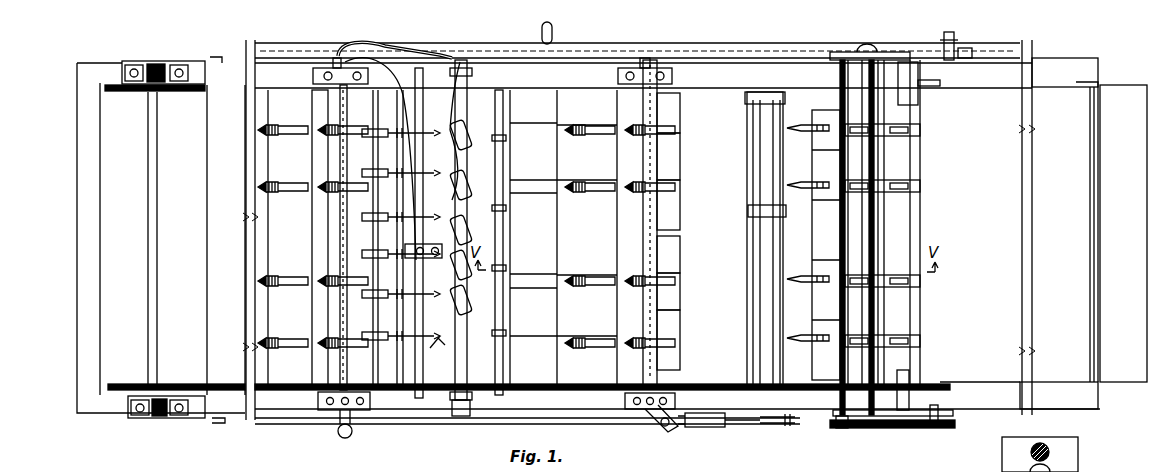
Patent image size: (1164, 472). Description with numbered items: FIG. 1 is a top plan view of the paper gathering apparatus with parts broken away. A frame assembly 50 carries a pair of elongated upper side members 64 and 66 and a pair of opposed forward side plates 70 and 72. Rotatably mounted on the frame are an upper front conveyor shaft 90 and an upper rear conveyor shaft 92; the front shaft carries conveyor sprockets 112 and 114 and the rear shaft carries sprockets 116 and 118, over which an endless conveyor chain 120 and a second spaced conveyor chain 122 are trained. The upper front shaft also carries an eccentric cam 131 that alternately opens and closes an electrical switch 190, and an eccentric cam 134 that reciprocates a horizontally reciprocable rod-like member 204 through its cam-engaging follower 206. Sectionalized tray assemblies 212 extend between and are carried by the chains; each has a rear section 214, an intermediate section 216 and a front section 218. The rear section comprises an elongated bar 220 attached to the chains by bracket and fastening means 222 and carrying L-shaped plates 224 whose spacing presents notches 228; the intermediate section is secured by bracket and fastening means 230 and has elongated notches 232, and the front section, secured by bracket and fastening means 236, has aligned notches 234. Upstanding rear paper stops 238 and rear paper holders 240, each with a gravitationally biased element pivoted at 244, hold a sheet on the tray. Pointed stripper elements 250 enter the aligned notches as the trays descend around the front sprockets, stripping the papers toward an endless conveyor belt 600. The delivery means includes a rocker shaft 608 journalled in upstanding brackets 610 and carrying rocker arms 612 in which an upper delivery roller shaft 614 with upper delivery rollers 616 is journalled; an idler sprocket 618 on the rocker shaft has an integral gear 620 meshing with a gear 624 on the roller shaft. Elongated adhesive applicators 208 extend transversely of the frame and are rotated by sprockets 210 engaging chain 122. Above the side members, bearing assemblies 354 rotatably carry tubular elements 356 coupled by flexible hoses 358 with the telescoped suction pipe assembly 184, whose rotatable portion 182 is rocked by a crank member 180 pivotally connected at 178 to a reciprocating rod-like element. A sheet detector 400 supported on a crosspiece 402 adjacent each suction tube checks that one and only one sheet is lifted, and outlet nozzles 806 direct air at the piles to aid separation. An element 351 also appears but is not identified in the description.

The frame assembly 50 is at (245, 52).
The upper side member 64 is at (280, 412).
The upper side member 66 is at (735, 62).
The forward side plate 70 is at (1078, 410).
The forward side plate 72 is at (1062, 58).
The upper front conveyor shaft 90 is at (765, 302).
The upper rear conveyor shaft 92 is at (150, 232).
The conveyor sprocket 112 is at (770, 90).
The conveyor sprocket 114 is at (755, 385).
The conveyor sprocket 116 is at (150, 62).
The conveyor sprocket 118 is at (155, 417).
The endless conveyor chain 120 is at (185, 92).
The endless conveyor chain 122 is at (193, 383).
The eccentric cam 131 is at (755, 198).
The eccentric cam 134 is at (783, 425).
The pivotal connection 178 is at (949, 32).
The crank member 180 is at (965, 48).
The rotatable portion 182 is at (648, 43).
The suction pipe assembly 184 is at (1000, 45).
The electrical switch 190 is at (750, 225).
The rod-like member 204 is at (407, 420).
The cam-engaging follower 206 is at (725, 428).
The adhesive applicator 208 is at (660, 155).
The sprocket 210 is at (318, 410).
The tray assembly 212 is at (292, 98).
The rear section 214 is at (490, 90).
The intermediate section 216 is at (597, 98).
The section 218 is at (672, 102).
The elongated bar 220 is at (495, 105).
The bracket and fastening means 222 is at (500, 90).
The L-shaped plates 224 is at (523, 140).
The notches 228 is at (548, 128).
The bracket and fastening means 230 is at (563, 90).
The elongated notches 232 is at (605, 128).
The notches 234 is at (668, 125).
The bracket and fastening means 236 is at (625, 370).
The rear paper stops 238 is at (510, 216).
The rear paper holders 240 is at (495, 145).
The pivot 244 is at (165, 471).
The stripper element 250 is at (800, 128).
The bar 351 is at (436, 233).
The bearing assembly 354 is at (455, 416).
The tubular element 356 is at (467, 345).
The flexible hose 358 is at (412, 45).
The sheet detector 400 is at (458, 220).
The crosspiece 402 is at (425, 260).
The endless conveyor belt 600 is at (1070, 192).
The rocker shaft 608 is at (876, 215).
The upstanding brackets 610 is at (880, 52).
The rocker arm 612 is at (842, 60).
The upper delivery roller shaft 614 is at (845, 165).
The upper delivery rollers 616 is at (855, 278).
The idler sprocket 618 is at (900, 428).
The gear 620 is at (878, 430).
The gear 624 is at (840, 428).
The outlet nozzles 806 is at (444, 350).